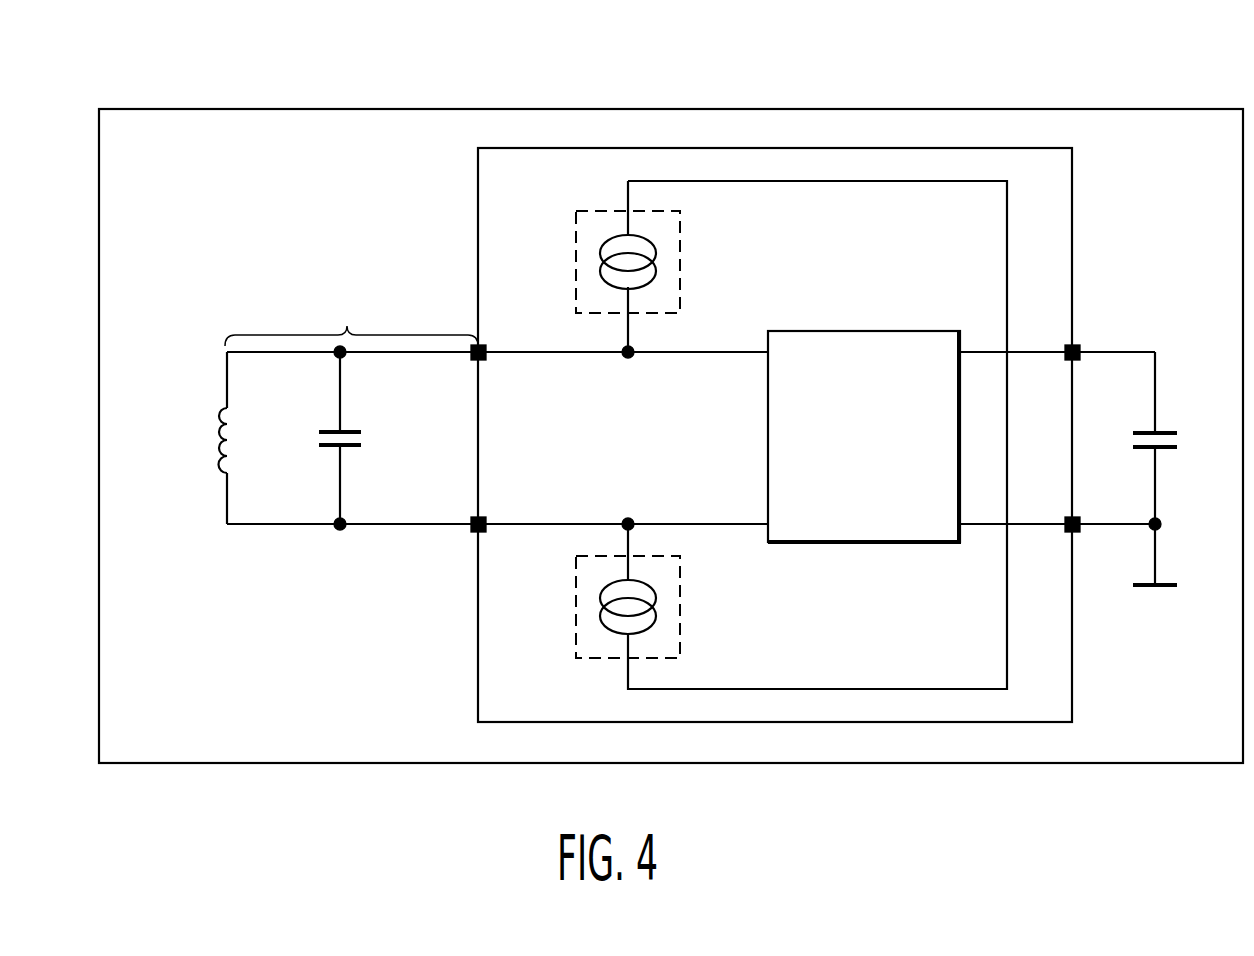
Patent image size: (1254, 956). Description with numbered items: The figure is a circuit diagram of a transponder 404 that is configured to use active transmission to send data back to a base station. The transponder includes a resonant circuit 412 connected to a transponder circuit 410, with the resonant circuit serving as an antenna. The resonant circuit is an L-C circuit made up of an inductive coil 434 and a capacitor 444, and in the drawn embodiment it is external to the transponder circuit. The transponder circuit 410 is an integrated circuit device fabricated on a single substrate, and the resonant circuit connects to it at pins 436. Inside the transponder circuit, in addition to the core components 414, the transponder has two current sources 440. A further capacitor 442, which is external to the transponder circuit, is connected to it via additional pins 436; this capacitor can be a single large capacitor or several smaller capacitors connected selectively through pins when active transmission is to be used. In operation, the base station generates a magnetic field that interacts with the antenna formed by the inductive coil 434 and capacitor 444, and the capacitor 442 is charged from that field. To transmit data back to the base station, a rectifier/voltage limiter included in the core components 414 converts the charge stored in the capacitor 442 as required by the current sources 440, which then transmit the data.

The transponder 404 is at (838, 109).
The transponder circuit 410 is at (478, 208).
The resonant circuit 412 is at (351, 319).
The core components 414 is at (910, 331).
The inductive coil 434 is at (217, 447).
The pins 436 is at (481, 348).
The current sources 440 is at (680, 260).
The capacitor 442 is at (1172, 433).
The capacitor 444 is at (330, 432).